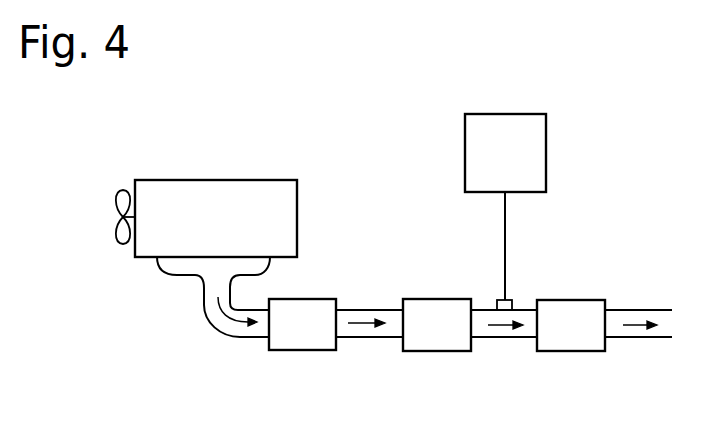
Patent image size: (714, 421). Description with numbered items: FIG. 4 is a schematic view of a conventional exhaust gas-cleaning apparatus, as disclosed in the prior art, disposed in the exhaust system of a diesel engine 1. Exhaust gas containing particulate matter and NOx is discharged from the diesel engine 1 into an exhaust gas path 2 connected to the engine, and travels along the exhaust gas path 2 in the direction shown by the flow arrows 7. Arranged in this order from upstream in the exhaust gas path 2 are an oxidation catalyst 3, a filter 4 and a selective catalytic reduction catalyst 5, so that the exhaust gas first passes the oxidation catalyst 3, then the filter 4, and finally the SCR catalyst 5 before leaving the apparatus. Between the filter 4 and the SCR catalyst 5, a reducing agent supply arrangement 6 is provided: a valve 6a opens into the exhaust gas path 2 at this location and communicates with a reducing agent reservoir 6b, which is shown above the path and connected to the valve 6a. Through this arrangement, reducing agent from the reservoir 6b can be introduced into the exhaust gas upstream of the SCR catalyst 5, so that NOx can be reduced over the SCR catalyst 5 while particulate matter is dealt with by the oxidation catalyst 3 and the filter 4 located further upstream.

The diesel engine 1 is at (201, 180).
The exhaust gas path 2 is at (252, 308).
The oxidation catalyst 3 is at (300, 350).
The filter 4 is at (437, 351).
The selective catalytic reduction (SCR) catalyst 5 is at (573, 351).
The reducing agent supply device 6 is at (499, 212).
The valve 6a is at (507, 300).
The reducing agent reservoir 6b is at (465, 140).
The air flow 7 is at (237, 326).